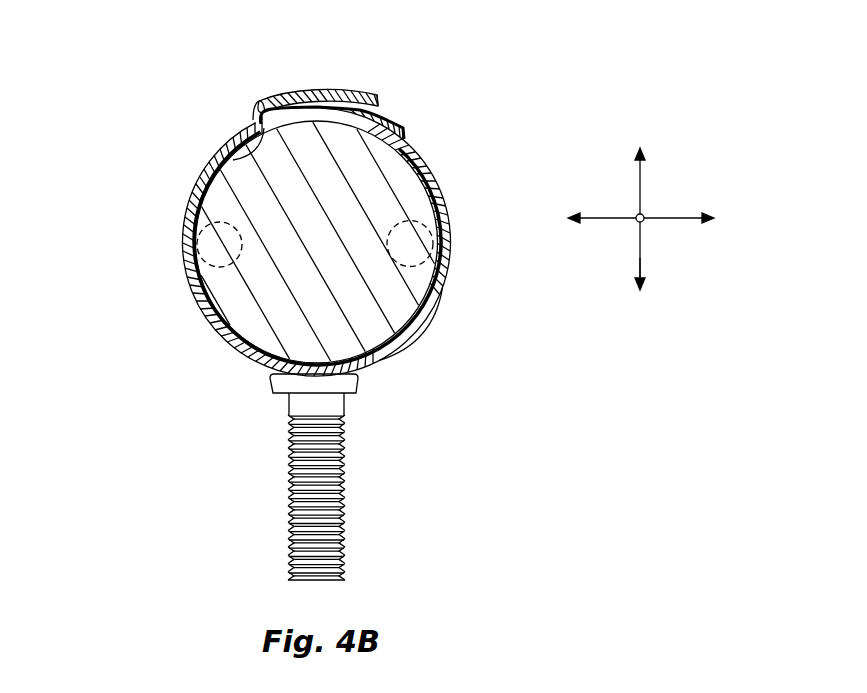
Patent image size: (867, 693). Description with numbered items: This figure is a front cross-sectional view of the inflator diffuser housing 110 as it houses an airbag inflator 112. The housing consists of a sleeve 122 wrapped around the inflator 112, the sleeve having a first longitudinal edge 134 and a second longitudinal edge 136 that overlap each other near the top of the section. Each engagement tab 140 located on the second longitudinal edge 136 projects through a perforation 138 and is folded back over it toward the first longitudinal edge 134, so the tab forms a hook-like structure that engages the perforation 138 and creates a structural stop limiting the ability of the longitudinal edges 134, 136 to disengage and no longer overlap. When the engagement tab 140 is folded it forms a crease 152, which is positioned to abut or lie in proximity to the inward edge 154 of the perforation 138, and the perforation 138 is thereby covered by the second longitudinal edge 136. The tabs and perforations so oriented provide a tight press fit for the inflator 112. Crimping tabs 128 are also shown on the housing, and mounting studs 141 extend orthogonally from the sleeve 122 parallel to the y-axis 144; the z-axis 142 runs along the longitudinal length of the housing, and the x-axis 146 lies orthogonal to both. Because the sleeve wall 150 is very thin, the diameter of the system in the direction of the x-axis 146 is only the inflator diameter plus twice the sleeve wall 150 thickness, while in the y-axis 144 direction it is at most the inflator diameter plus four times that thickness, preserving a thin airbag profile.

The inflator diffuser housing 110 is at (533, 138).
The airbag inflator 112 is at (270, 327).
The sleeve 122 is at (199, 321).
The crimping tabs 128 is at (193, 295).
The first longitudinal edge 134 is at (404, 133).
The second longitudinal edge 136 is at (208, 166).
The perforation 138 is at (346, 91).
The engagement tab 140 is at (320, 89).
The mounting studs 141 is at (345, 502).
The z-axis 142 is at (645, 213).
The y-axis 144 is at (640, 258).
The x-axis 146 is at (683, 220).
The sleeve wall 150 is at (387, 357).
The crease 152 is at (255, 112).
The inward edge 154 is at (259, 103).